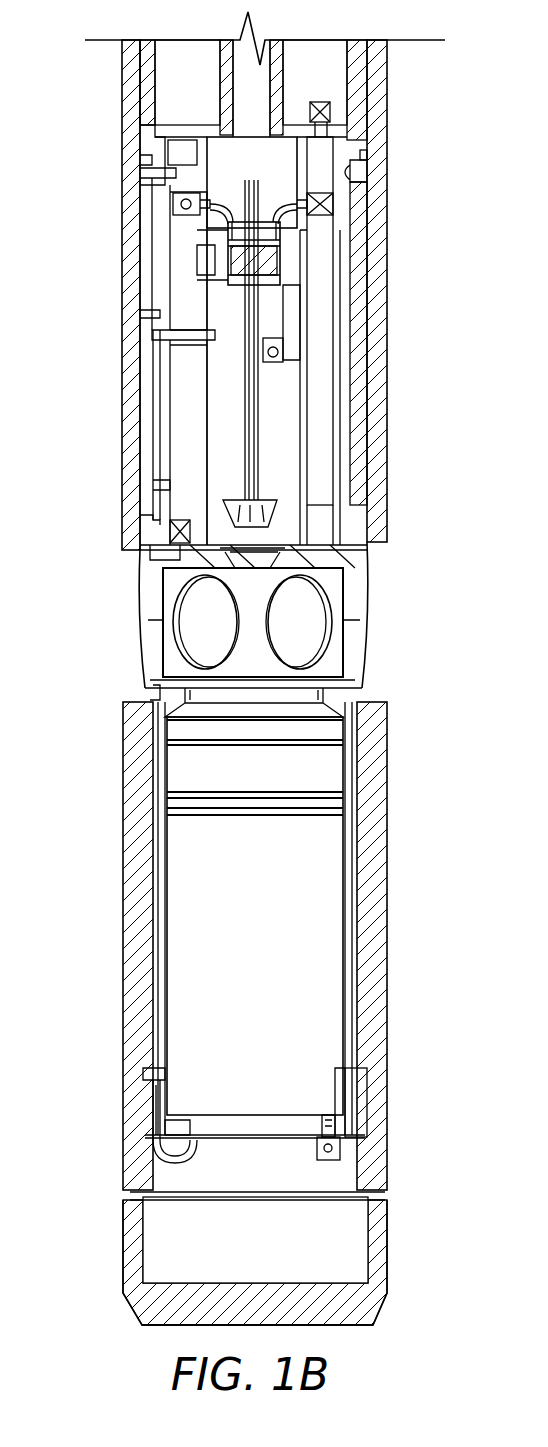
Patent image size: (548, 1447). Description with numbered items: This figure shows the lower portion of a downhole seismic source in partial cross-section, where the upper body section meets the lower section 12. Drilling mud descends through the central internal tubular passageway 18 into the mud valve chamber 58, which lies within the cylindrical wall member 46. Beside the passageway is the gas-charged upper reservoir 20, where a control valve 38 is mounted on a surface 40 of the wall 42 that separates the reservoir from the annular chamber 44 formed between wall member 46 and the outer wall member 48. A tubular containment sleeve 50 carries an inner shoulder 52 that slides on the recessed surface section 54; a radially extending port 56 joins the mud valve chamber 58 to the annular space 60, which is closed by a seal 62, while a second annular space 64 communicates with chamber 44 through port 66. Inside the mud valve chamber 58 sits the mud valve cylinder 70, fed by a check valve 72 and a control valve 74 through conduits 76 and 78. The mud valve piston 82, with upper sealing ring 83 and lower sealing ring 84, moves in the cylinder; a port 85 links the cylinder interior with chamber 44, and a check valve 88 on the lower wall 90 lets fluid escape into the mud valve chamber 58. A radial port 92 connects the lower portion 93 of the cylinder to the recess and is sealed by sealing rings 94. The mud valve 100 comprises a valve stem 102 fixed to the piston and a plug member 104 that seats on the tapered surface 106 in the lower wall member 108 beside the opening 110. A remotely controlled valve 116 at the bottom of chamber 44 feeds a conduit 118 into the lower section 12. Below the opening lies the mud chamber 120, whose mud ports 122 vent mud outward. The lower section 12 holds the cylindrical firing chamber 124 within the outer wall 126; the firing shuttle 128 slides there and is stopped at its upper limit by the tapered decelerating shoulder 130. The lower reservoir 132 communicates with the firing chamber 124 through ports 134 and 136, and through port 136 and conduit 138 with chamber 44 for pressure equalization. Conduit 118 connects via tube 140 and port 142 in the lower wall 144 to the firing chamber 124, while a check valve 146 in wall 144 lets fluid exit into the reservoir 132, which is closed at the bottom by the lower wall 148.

The lower section 12 is at (122, 817).
The central internal tubular passageway 18 is at (240, 100).
The upper reservoir 20 is at (168, 72).
The control valve 38 is at (332, 112).
The surface 40 is at (175, 133).
The wall 42 is at (217, 130).
The annular chamber 44 is at (322, 446).
The cylindrical wall member 46 is at (302, 376).
The outer wall member 48 is at (347, 401).
The containment sleeve 50 is at (118, 282).
The inner shoulder 52 is at (378, 228).
The recessed surface section 54 is at (160, 431).
The radially extending port 56 is at (168, 154).
The mud valve chamber 58 is at (235, 170).
The annular space 60 is at (356, 170).
The seal 62 is at (366, 155).
The annular space 64 is at (360, 422).
The port 66 is at (162, 488).
The mud valve cylinder 70 is at (312, 298).
The check valve 72 is at (173, 204).
The control valve 74 is at (333, 204).
The conduit 76 is at (228, 233).
The conduit 78 is at (300, 231).
The mud valve piston 82 is at (280, 241).
The upper sealing ring 83 is at (205, 238).
The lower sealing ring 84 is at (280, 280).
The port 85 is at (228, 263).
The check valve 88 is at (283, 351).
The lower wall 90 is at (200, 352).
The radial port 92 is at (152, 350).
The lower portion 93 is at (283, 318).
The sealing rings 94 is at (152, 311).
The mud valve 100 is at (278, 490).
The valve stem 102 is at (258, 476).
The plug member 104 is at (360, 518).
The tapered surface 106 is at (220, 579).
The lower wall member 108 is at (325, 563).
The opening 110 is at (322, 581).
The remotely controlled valve 116 is at (170, 522).
The conduit 118 is at (175, 554).
The mud chamber 120 is at (322, 670).
The mud ports 122 is at (192, 632).
The firing chamber 124 is at (333, 662).
The outer wall 126 is at (375, 859).
The firing shuttle 128 is at (348, 762).
The decelerating shoulder 130 is at (332, 701).
The lower reservoir 132 is at (350, 1206).
The port 134 is at (147, 1076).
The port 136 is at (364, 1079).
The conduit 138 is at (352, 976).
The tube 140 is at (158, 1160).
The port 142 is at (165, 1123).
The lower wall 144 is at (238, 1137).
The check valve 146 is at (340, 1151).
The lower wall 148 is at (148, 1309).